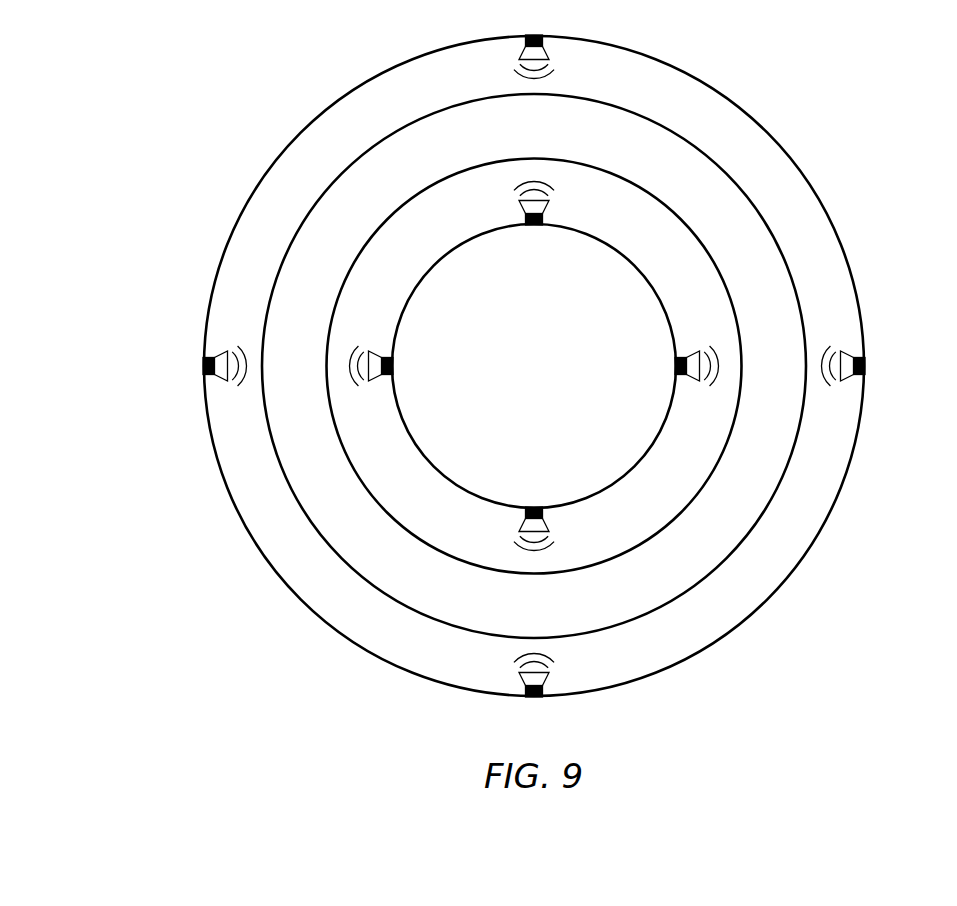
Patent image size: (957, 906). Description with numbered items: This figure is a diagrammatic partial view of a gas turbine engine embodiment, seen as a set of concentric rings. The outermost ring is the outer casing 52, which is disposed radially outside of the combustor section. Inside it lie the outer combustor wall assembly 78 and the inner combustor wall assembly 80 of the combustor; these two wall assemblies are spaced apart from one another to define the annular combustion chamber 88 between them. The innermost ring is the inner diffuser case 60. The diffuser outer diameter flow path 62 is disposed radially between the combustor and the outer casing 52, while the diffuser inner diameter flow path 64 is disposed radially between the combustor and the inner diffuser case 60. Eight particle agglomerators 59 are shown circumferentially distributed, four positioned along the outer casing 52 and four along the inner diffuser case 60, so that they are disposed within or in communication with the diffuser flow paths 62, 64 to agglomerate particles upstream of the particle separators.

The outer casing 52 is at (818, 197).
The outer combustor wall assembly 78 is at (793, 287).
The inner combustor wall assembly 80 is at (693, 505).
The inner diffuser case 60 is at (650, 448).
The combustion chamber 88 is at (785, 410).
The diffuser outer diameter flow path 62 is at (250, 472).
The diffuser inner diameter flow path 64 is at (425, 505).
The particle agglomerator 59 is at (522, 220).